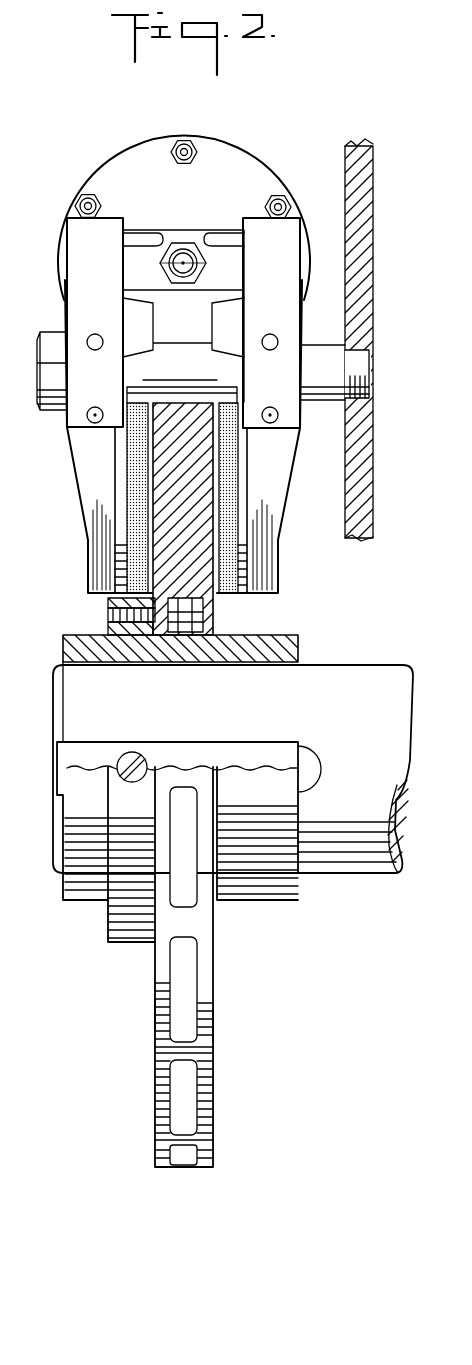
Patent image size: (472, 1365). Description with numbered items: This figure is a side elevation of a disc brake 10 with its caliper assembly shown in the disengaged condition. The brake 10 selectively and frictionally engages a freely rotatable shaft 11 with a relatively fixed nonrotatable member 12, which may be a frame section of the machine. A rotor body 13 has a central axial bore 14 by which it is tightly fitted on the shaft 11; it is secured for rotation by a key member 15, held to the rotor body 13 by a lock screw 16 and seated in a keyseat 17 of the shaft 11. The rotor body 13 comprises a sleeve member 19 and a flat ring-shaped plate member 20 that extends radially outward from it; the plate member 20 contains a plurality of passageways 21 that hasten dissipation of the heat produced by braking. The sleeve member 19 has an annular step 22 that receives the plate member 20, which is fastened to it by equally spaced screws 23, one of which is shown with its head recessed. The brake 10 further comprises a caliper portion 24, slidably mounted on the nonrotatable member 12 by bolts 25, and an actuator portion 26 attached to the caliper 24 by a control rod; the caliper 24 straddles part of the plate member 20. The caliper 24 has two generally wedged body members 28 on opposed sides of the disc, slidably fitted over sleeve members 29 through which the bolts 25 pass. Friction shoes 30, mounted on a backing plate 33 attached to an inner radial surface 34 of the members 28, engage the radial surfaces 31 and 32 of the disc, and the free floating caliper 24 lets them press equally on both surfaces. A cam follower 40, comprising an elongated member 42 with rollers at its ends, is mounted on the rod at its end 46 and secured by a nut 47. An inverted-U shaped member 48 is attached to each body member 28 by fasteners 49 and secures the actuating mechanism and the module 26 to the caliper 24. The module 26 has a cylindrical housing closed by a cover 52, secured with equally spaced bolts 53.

The brake 10 is at (300, 96).
The shaft 11 is at (395, 670).
The nonrotatable member 12 is at (366, 174).
The rotor body 13 is at (223, 1167).
The central axial bore 14 is at (158, 663).
The key member 15 is at (90, 755).
The lock screw 16 is at (132, 752).
The keyseat 17 is at (318, 760).
The sleeve member 19 is at (300, 648).
The plate member 20 is at (200, 1051).
The passageways 21 is at (187, 847).
The annular step 22 is at (157, 622).
The screws 23 is at (205, 614).
The caliper portion 24 is at (283, 560).
The bolts 25 is at (57, 412).
The actuator portion 26 is at (240, 178).
The body members 28 is at (96, 527).
The sleeve members 29 is at (330, 352).
The friction shoes 30 is at (230, 412).
The radial surface 31 is at (212, 1025).
The radial surface 32 is at (152, 1012).
The backing plate 33 is at (118, 474).
The inner radial surface 34 is at (114, 447).
The cam follower 40 is at (166, 230).
The elongated member 42 is at (205, 285).
The end of rod 46 is at (186, 258).
The nut 47 is at (160, 262).
The member 48 is at (80, 305).
The fasteners 49 is at (101, 350).
The cover 52 is at (122, 160).
The bolts 53 is at (190, 138).